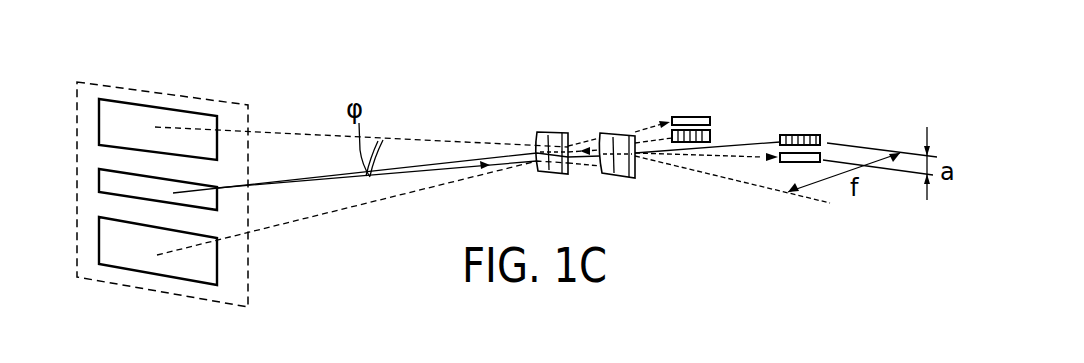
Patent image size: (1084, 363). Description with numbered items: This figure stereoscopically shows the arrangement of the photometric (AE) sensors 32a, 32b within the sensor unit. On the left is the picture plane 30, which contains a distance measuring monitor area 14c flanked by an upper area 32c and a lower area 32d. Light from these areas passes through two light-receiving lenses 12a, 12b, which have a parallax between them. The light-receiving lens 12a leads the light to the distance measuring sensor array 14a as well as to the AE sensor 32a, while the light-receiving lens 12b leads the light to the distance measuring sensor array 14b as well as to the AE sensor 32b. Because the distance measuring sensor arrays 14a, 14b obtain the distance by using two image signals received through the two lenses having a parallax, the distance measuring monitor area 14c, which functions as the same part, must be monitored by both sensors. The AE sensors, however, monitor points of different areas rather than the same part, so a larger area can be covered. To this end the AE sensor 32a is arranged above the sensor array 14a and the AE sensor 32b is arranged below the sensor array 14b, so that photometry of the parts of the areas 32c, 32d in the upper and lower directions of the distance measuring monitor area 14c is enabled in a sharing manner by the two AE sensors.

The picture plane 30 is at (228, 103).
The area 32c is at (157, 106).
The distance measuring monitor area 14c is at (217, 200).
The area 32d is at (153, 273).
The light-receiving lens 12a is at (547, 129).
The light-receiving lens 12b is at (612, 131).
The AE sensor 32a is at (684, 116).
The distance measuring sensor array 14a is at (711, 135).
The distance measuring sensor array 14b is at (800, 134).
The AE sensor 32b is at (787, 163).